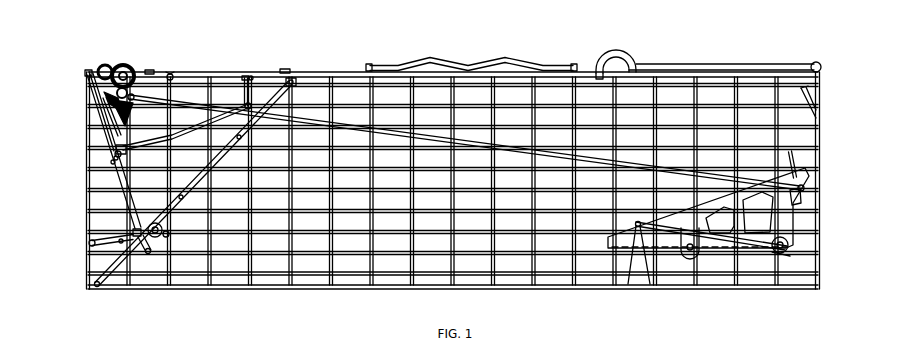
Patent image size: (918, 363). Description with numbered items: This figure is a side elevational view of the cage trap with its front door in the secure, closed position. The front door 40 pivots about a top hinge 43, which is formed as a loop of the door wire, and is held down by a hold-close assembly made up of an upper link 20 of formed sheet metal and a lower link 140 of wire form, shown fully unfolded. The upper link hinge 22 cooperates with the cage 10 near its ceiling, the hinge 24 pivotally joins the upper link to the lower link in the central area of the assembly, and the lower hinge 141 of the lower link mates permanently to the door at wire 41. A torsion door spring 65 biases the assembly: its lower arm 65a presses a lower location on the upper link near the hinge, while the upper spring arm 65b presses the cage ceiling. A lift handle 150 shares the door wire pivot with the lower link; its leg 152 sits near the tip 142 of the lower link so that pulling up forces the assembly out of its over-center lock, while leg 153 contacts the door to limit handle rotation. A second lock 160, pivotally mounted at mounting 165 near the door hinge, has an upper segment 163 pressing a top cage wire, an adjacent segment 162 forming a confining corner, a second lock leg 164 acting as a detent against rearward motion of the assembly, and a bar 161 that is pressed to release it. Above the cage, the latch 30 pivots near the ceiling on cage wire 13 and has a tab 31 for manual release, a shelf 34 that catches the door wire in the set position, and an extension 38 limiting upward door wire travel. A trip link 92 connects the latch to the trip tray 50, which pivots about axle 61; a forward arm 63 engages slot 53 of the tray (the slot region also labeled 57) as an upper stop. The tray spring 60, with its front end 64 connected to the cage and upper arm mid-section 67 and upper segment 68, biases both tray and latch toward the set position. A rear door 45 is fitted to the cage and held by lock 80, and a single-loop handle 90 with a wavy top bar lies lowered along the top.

The cage 10 is at (265, 290).
The wire of cage 13 is at (122, 66).
The upper link 20 is at (105, 125).
The upper link hinge 22 is at (85, 73).
The upper link hinge 24 is at (114, 158).
The latch 30 is at (117, 92).
The tab 31 is at (150, 72).
The shelf 34 is at (131, 110).
The extension 38 is at (110, 107).
The front door 40 is at (205, 183).
The wire of door 41 is at (161, 228).
The top hinge 43 is at (287, 72).
The rear door 45 is at (822, 130).
The tray 50 is at (797, 232).
The slot 53 is at (694, 258).
The slot 57 is at (758, 232).
The tray spring 60 is at (788, 254).
The axle 61 is at (789, 251).
The forward arm 63 is at (688, 251).
The front end of tray spring 64 is at (640, 228).
The door spring 65 is at (100, 67).
The lower arm of door spring 65a is at (114, 154).
The upper spring arm 65b is at (171, 73).
The mid-section 67 is at (797, 195).
The upper segment 68 is at (796, 164).
The lock 80 is at (688, 66).
The handle 90 is at (508, 63).
The trip link 92 is at (385, 130).
The lower link 140 is at (120, 197).
The lower hinge 141 is at (165, 235).
The tip of lower link 142 is at (135, 233).
The lift handle 150 is at (95, 242).
The leg of lift handle 152 is at (120, 244).
The leg 153 is at (148, 252).
The second lock 160 is at (183, 138).
The bar 161 is at (112, 162).
The adjacent segment 162 is at (246, 77).
The upper segment 163 is at (251, 76).
The second lock leg 164 is at (125, 151).
The pivotal mounting 165 is at (296, 80).